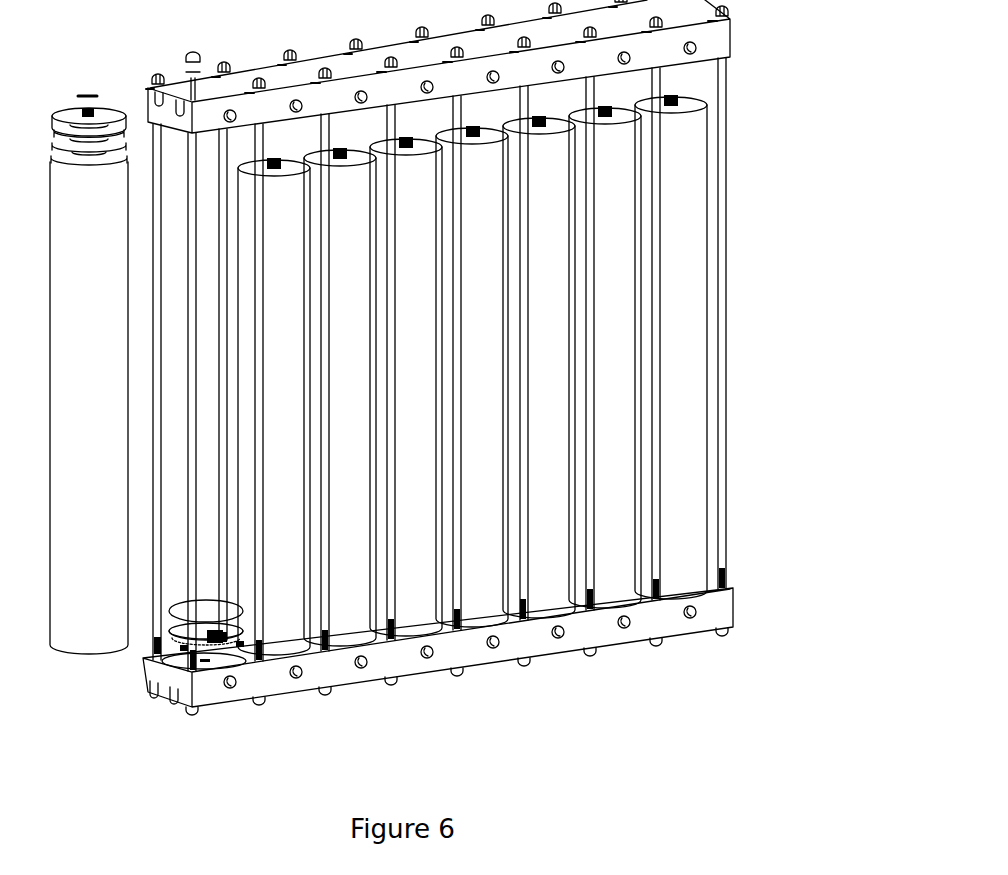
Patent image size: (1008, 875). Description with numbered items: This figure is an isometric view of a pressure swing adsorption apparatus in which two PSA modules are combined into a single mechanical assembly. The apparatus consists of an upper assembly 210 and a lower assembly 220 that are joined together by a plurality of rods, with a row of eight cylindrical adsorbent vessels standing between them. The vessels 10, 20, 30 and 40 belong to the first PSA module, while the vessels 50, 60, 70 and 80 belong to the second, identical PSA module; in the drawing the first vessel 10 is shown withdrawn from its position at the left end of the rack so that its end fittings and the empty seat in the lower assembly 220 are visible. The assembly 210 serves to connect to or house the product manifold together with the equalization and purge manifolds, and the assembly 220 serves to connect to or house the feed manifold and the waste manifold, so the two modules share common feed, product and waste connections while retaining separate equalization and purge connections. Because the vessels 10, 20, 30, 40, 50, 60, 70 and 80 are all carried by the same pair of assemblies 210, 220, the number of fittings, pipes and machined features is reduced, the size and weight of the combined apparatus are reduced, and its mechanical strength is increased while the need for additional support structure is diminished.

The vessel 10 is at (100, 397).
The vessel 20 is at (298, 409).
The vessel 30 is at (365, 396).
The vessel 40 is at (430, 386).
The vessel 50 is at (500, 382).
The vessel 60 is at (563, 377).
The vessel 70 is at (630, 369).
The vessel 80 is at (697, 366).
The assembly 210 is at (716, 40).
The assembly 220 is at (538, 645).